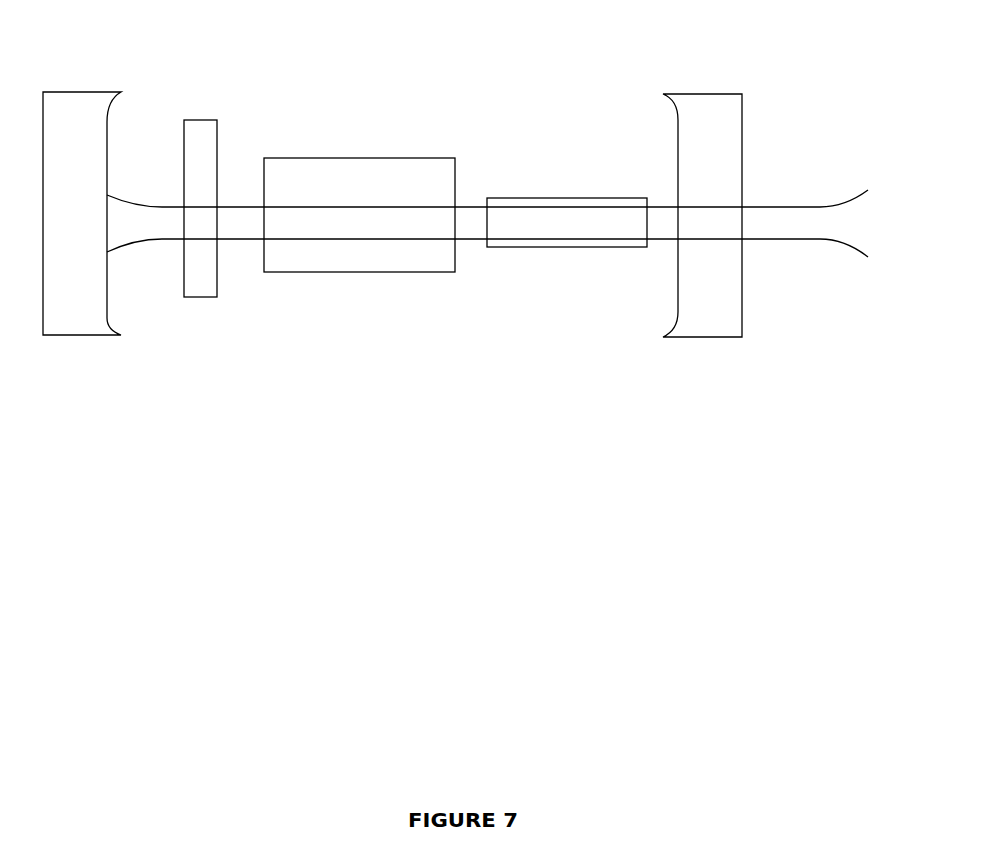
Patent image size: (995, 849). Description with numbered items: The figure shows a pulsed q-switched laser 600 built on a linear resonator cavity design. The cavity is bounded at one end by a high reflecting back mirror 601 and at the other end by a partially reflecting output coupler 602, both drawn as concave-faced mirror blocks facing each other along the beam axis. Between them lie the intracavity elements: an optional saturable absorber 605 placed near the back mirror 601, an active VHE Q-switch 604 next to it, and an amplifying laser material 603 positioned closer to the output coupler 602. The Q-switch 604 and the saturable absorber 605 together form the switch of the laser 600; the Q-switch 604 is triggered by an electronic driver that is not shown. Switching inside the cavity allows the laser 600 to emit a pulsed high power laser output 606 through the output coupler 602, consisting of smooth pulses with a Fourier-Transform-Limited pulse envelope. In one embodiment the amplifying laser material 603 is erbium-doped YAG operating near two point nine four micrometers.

The pulsed q-switched laser 600 is at (246, 389).
The high reflecting back mirror 601 is at (65, 97).
The partially reflecting output coupler 602 is at (700, 100).
The amplifying laser material 603 is at (542, 198).
The active VHE Q-switch 604 is at (335, 165).
The saturable absorber 605 is at (193, 125).
The pulsed high power laser output 606 is at (780, 213).